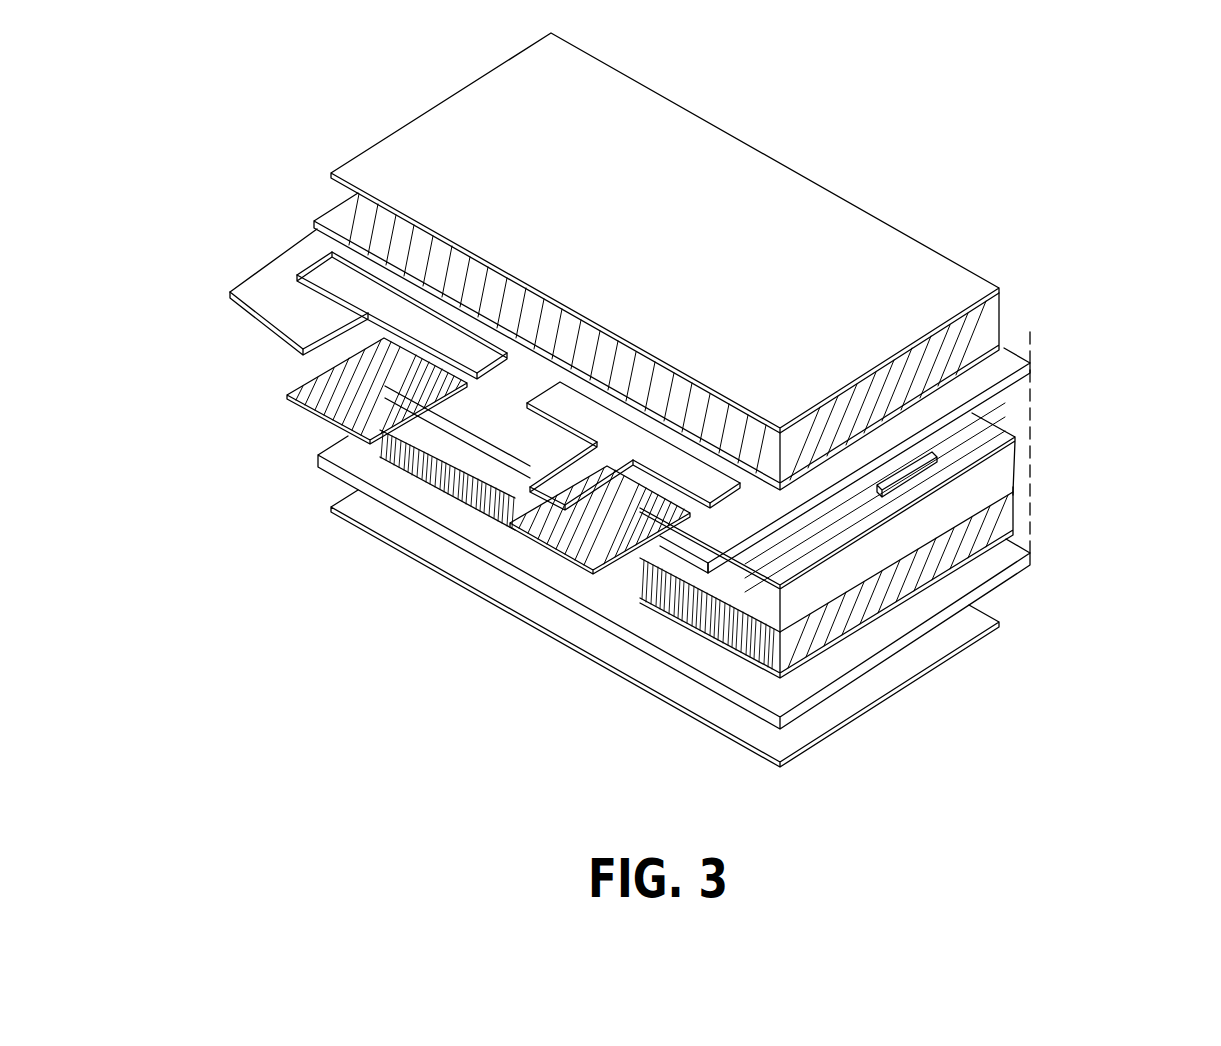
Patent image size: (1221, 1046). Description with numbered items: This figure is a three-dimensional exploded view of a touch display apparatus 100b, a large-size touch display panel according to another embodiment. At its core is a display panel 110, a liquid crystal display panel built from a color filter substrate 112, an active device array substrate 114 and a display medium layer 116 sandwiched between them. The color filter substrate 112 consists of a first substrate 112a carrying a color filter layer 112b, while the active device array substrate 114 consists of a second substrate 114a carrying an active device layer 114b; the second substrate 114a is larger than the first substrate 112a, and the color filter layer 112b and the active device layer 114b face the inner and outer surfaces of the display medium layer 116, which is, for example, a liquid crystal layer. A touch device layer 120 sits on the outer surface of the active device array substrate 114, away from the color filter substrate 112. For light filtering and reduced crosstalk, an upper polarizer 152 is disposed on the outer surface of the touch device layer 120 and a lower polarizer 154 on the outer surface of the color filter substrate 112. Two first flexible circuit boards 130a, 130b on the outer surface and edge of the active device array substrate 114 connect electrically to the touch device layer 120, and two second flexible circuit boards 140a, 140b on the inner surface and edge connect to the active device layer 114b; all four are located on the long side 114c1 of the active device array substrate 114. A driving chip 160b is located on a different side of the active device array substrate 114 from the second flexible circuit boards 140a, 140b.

The touch display apparatus 100b is at (1012, 777).
The display panel 110 is at (1150, 355).
The color filter substrate 112 is at (1098, 495).
The first substrate 112a is at (1012, 558).
The color filter layer 112b is at (1010, 519).
The active device array substrate 114 is at (1096, 327).
The second substrate 114a is at (978, 357).
The active device layer 114b is at (978, 430).
The long side 114c1 is at (706, 566).
The display medium layer 116 is at (990, 488).
The touch device layer 120 is at (972, 339).
The first flexible circuit board 130a is at (323, 353).
The first flexible circuit board 130b is at (580, 480).
The second flexible circuit board 140a is at (328, 402).
The second flexible circuit board 140b is at (598, 553).
The upper polarizer 152 is at (958, 288).
The lower polarizer 154 is at (982, 620).
The driving chip 160b is at (903, 483).